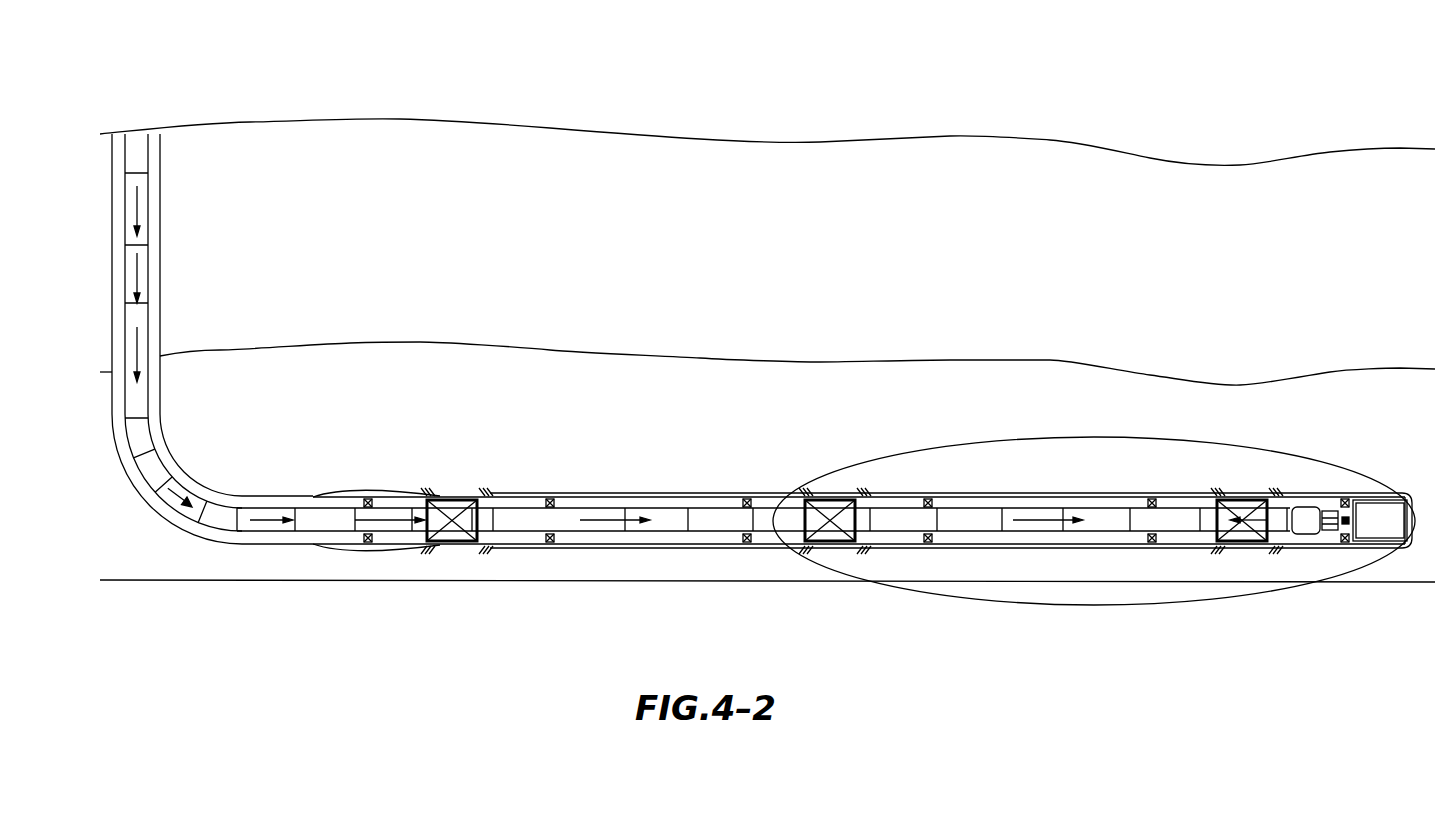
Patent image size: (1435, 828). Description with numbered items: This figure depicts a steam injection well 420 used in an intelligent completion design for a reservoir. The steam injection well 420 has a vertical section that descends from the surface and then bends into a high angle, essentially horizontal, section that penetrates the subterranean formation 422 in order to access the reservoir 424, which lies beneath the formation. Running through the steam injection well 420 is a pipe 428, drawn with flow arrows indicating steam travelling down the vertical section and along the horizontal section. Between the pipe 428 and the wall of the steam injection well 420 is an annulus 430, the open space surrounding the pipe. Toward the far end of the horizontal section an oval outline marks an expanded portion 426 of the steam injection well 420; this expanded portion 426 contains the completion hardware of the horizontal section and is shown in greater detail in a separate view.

The steam injection well 420 is at (462, 470).
The subterranean formation 422 is at (1275, 200).
The reservoir 424 is at (1274, 407).
The expanded portion 426 is at (1320, 445).
The pipe 428 is at (165, 319).
The annulus 430 is at (248, 552).